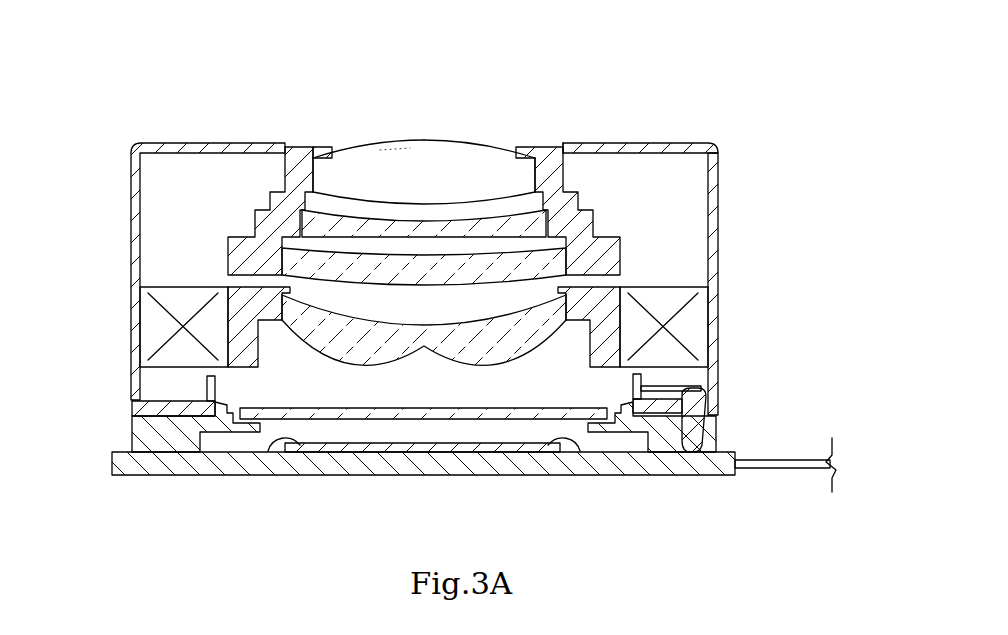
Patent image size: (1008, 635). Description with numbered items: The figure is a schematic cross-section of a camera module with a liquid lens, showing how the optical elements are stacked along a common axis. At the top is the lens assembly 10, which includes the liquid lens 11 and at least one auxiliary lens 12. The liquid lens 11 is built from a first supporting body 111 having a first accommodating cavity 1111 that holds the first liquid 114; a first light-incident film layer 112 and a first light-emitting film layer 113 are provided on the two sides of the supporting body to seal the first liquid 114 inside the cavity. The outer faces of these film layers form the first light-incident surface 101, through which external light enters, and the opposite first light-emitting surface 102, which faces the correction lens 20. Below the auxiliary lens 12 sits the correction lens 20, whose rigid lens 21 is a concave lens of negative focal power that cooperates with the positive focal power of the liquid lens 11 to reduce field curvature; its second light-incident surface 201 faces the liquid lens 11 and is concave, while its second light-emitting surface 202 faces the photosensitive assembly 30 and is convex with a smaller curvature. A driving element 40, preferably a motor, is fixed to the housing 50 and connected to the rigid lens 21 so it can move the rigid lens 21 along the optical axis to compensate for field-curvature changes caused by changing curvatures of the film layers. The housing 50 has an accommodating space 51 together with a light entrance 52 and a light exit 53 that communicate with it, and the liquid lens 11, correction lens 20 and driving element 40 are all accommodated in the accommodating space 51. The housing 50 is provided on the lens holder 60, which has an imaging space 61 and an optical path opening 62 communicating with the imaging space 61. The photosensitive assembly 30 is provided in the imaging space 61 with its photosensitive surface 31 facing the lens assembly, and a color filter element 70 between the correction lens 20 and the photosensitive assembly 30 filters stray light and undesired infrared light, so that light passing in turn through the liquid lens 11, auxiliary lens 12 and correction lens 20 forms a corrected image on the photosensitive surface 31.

The lens assembly 10 is at (504, 144).
The liquid lens 11 is at (630, 217).
The first supporting body 111 is at (575, 148).
The first accommodating cavity 1111 is at (528, 155).
The first light-incident film layer 112 is at (488, 150).
The first light-emitting film layer 113 is at (470, 200).
The first liquid 114 is at (362, 157).
The first light-incident surface 101 is at (367, 163).
The first light-emitting surface 102 is at (315, 162).
The light entrance 52 is at (395, 153).
The auxiliary lens 12 is at (493, 232).
The housing 50 is at (131, 238).
The accommodating space 51 is at (312, 287).
The driving element 40 is at (378, 327).
The correction lens 20 is at (579, 325).
The second light-incident surface 201 is at (540, 308).
The rigid lens 21 is at (540, 332).
The second light-emitting surface 202 is at (550, 348).
The light exit 53 is at (298, 367).
The lens holder 60 is at (160, 427).
The color filter element 70 is at (352, 412).
The imaging space 61 is at (377, 435).
The optical path opening 62 is at (398, 428).
The photosensitive surface 31 is at (507, 452).
The photosensitive assembly 30 is at (530, 453).